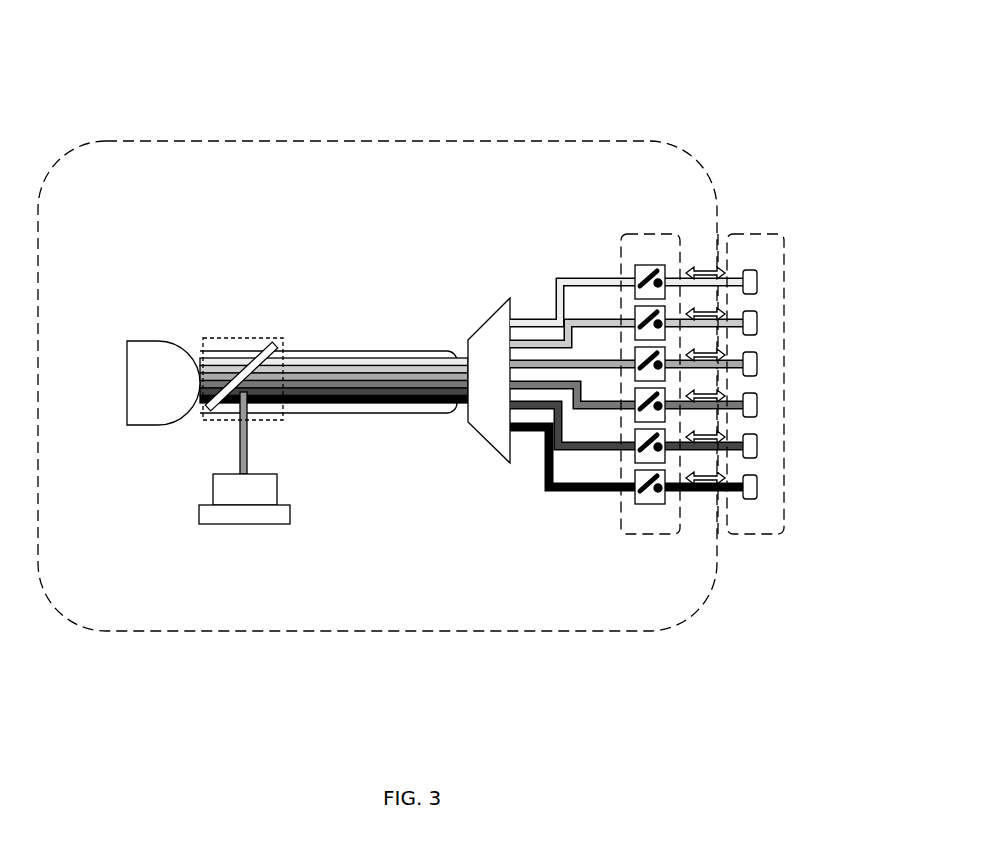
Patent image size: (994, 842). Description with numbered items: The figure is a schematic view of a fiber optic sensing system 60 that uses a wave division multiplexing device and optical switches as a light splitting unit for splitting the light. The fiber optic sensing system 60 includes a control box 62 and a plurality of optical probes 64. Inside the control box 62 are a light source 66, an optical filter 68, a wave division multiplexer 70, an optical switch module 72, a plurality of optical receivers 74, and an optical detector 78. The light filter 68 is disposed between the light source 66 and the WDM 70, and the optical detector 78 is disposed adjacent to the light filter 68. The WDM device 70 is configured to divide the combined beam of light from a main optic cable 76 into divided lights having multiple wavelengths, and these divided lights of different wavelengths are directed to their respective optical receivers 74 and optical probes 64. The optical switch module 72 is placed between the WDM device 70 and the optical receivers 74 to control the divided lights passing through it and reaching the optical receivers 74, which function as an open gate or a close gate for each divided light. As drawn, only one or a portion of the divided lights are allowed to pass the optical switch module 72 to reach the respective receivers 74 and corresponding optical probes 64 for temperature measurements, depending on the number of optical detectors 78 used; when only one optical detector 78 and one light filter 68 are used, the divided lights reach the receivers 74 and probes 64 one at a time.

The fiber optic sensing system 60 is at (592, 70).
The control box 62 is at (383, 140).
The optical probes 64 is at (757, 279).
The light source 66 is at (150, 340).
The optical filter 68 is at (270, 345).
The wave division multiplexer 70 is at (495, 318).
The optical switch module 72 is at (638, 233).
The optical receivers 74 is at (662, 274).
The main optic cable 76 is at (345, 350).
The optical detector 78 is at (246, 525).